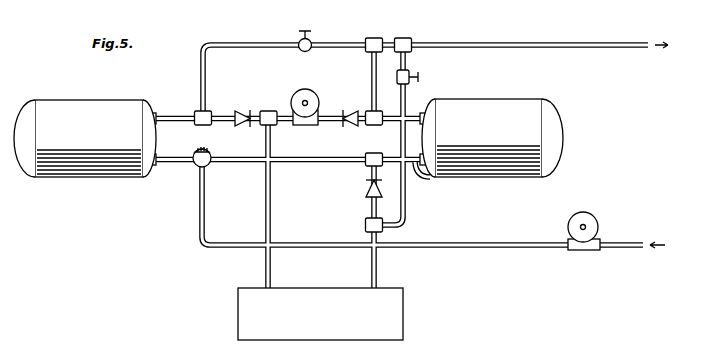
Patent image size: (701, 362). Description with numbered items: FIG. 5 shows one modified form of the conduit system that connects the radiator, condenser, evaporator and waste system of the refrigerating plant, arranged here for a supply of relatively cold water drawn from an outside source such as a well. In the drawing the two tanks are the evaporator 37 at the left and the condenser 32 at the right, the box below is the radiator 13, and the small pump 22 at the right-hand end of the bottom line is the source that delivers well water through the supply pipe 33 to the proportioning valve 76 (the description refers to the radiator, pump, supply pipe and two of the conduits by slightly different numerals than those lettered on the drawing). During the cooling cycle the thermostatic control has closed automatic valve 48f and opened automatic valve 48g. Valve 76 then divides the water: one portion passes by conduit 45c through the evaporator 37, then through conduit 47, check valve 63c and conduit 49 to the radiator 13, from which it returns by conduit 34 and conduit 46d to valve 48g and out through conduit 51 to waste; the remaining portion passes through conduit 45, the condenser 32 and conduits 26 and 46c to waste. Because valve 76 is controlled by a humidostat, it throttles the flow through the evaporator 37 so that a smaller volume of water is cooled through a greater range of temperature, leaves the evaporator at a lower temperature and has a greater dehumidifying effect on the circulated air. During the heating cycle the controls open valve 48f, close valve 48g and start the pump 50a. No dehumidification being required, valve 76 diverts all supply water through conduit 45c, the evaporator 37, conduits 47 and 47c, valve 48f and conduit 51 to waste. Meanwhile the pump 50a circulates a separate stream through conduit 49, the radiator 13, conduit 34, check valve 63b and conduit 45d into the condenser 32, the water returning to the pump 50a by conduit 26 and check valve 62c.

The radiator 13 is at (405, 312).
The pump 22 is at (600, 218).
The pipe 26 is at (407, 111).
The condenser 32 is at (494, 96).
The return pipe 33 is at (478, 238).
The pipe to radiator 34 is at (377, 272).
The evaporator 37 is at (91, 96).
The conduit 45 is at (307, 163).
The conduit 45c is at (178, 165).
The conduit 45d is at (415, 170).
The conduit 46c is at (371, 70).
The conduit 46d is at (407, 212).
The conduit 47 is at (170, 114).
The conduit 47c is at (200, 68).
The automatic valve 48f is at (298, 40).
The automatic valve 48g is at (419, 80).
The conduit 49 is at (272, 140).
The pump 50a is at (297, 93).
The conduit 51 is at (496, 37).
The check valve 62c is at (346, 184).
The check valve 63b is at (366, 189).
The check valve 63c is at (245, 109).
The proportioning valve 76 is at (194, 152).